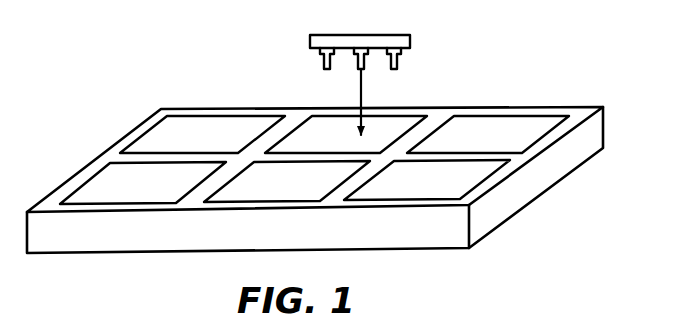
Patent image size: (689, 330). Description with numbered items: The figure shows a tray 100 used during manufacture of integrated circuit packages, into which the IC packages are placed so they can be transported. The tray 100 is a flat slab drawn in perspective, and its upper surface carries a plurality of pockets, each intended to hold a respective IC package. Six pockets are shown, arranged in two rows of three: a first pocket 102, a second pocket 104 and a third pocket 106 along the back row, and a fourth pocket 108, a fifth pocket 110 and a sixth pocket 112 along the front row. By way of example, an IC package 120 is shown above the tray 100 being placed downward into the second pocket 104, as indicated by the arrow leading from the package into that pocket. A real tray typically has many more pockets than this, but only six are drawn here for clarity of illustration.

The tray 100 is at (549, 172).
The first pocket 102 is at (200, 134).
The second pocket 104 is at (380, 129).
The third pocket 106 is at (492, 130).
The fourth pocket 108 is at (113, 186).
The fifth pocket 110 is at (277, 186).
The sixth pocket 112 is at (419, 185).
The IC package 120 is at (308, 41).